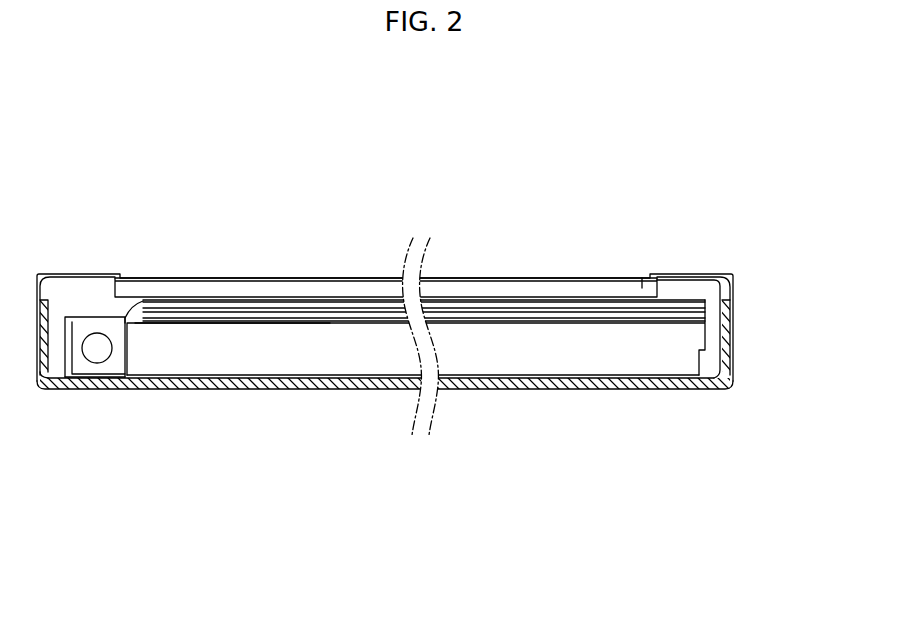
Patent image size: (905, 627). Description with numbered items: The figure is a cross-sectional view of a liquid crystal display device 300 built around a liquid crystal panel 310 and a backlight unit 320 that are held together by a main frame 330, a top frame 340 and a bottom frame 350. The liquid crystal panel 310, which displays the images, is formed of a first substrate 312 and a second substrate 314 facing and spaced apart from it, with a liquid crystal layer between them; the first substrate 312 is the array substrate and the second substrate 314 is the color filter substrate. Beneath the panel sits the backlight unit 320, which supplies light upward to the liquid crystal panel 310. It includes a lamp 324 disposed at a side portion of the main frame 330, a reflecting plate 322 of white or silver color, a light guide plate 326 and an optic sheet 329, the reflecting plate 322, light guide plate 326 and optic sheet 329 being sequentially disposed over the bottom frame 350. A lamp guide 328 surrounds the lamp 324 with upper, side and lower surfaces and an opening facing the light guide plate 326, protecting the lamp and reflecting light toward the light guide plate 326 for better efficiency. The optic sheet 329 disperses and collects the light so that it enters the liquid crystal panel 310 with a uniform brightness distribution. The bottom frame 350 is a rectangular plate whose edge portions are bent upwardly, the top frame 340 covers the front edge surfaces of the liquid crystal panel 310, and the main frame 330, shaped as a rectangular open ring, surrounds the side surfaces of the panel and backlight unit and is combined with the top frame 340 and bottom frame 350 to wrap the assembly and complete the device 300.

The liquid crystal display device 300 is at (492, 143).
The liquid crystal panel 310 is at (530, 196).
The first substrate 312 is at (547, 286).
The second substrate 314 is at (505, 278).
The backlight unit 320 is at (350, 485).
The reflecting plate 322 is at (190, 381).
The lamp 324 is at (96, 356).
The light guide plate 326 is at (252, 358).
The lamp guide 328 is at (77, 374).
The optic sheet 329 is at (329, 338).
The main frame 330 is at (717, 342).
The top frame 340 is at (693, 275).
The bottom frame 350 is at (650, 383).